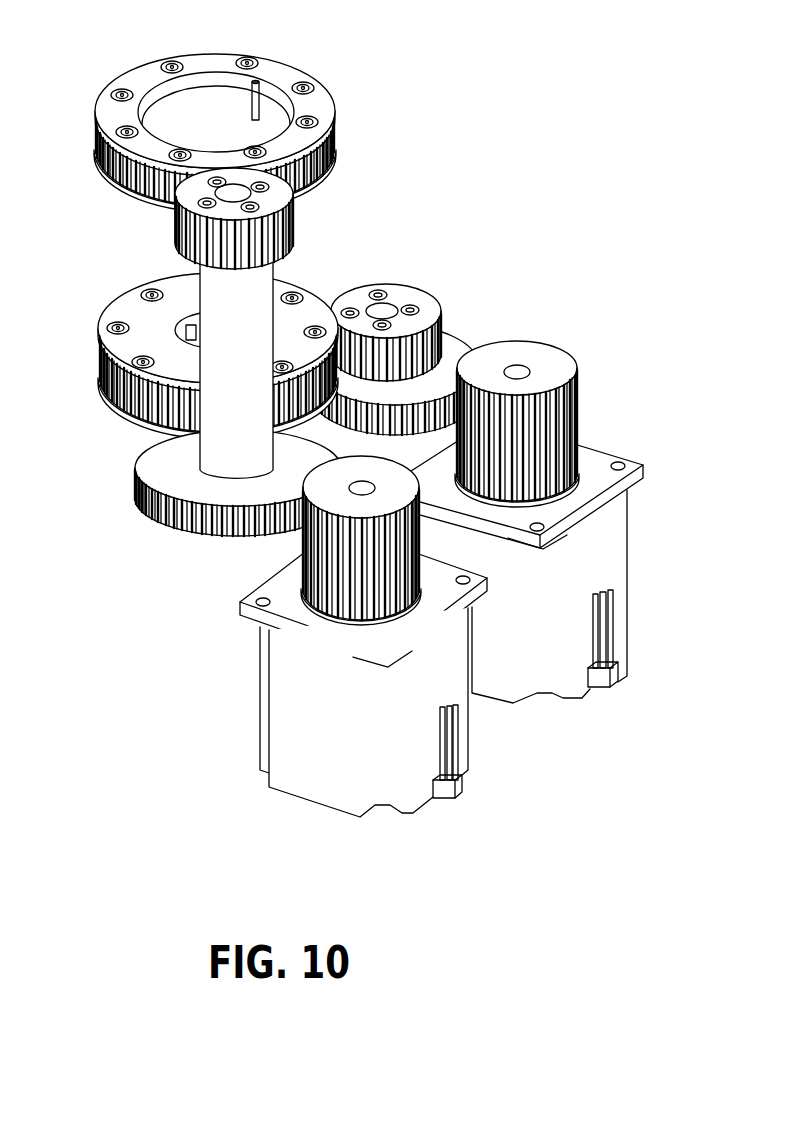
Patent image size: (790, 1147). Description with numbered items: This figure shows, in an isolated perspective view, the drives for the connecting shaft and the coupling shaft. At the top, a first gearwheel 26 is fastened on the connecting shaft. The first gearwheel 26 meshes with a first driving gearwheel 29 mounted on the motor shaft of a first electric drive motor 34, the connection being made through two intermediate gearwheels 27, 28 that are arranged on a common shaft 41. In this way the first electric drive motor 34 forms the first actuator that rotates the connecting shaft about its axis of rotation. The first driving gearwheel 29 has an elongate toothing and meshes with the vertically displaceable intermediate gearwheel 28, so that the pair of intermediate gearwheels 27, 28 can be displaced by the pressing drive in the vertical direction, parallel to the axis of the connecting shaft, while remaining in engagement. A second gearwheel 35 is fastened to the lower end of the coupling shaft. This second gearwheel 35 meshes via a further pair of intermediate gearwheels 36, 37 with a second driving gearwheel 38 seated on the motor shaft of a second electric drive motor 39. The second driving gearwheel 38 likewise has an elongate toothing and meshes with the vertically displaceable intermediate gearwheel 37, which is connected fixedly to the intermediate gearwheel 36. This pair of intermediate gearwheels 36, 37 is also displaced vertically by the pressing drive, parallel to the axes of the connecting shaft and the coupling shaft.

The first gearwheel 26 is at (273, 72).
The intermediate gearwheel 27 is at (295, 210).
The intermediate gearwheel 28 is at (162, 460).
The first driving gearwheel 29 is at (292, 545).
The first electric drive motor 34 is at (295, 720).
The second gearwheel 35 is at (130, 307).
The intermediate gearwheel 36 is at (400, 293).
The intermediate gearwheel 37 is at (455, 342).
The second driving gearwheel 38 is at (540, 358).
The second electric drive motor 39 is at (607, 545).
The common shaft 41 is at (250, 280).